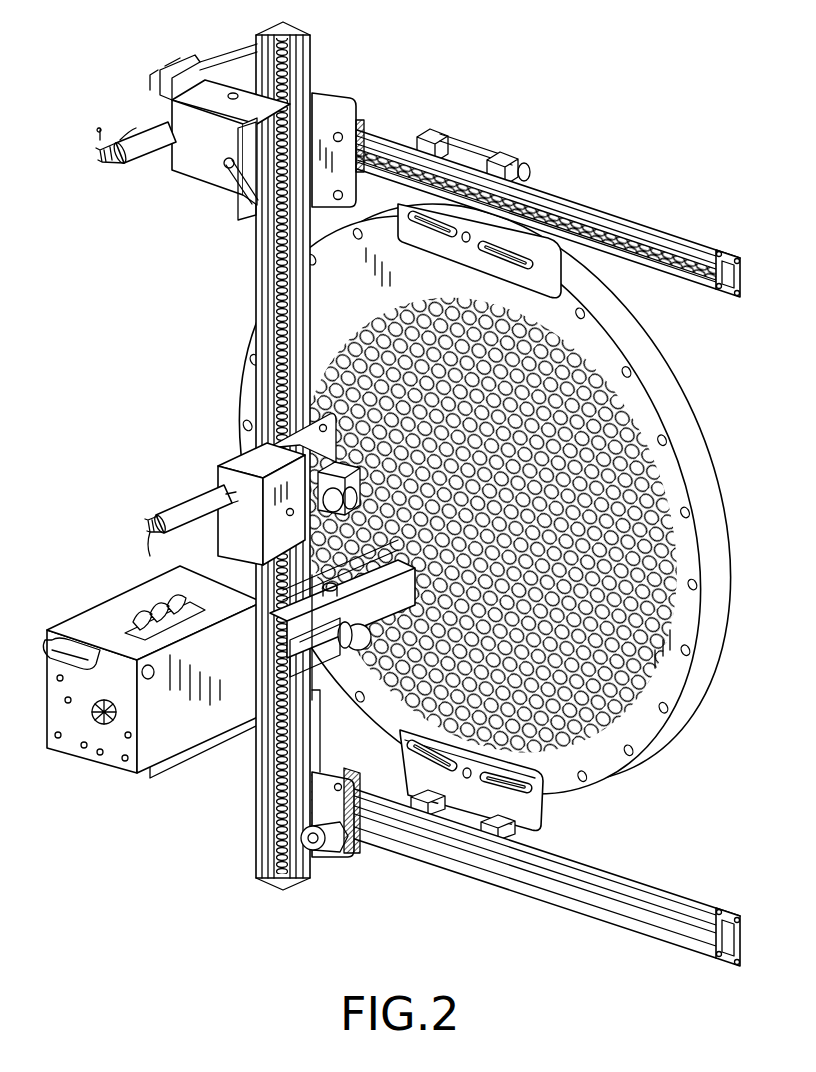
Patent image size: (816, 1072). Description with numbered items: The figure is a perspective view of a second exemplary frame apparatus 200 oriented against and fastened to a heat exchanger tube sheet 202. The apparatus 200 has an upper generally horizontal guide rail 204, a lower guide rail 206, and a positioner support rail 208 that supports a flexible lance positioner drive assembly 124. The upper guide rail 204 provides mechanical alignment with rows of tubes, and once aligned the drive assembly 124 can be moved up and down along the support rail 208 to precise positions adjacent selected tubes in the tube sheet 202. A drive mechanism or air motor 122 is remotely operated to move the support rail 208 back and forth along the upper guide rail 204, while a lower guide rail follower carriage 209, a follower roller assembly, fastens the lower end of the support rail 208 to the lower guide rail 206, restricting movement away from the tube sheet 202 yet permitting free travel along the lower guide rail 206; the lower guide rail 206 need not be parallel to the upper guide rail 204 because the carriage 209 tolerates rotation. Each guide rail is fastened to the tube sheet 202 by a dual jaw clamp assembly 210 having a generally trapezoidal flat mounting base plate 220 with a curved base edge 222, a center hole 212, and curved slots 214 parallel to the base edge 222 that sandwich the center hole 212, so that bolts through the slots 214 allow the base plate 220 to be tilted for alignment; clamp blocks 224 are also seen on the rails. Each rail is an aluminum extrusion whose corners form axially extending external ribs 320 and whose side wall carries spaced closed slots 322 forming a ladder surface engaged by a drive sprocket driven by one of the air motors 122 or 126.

The frame apparatus 200 is at (642, 170).
The tube sheet 202 is at (705, 466).
The upper guide rail 204 is at (568, 243).
The lower guide rail 206 is at (694, 898).
The positioner support rail 208 is at (256, 262).
The lower guide rail follower carriage 209 is at (334, 872).
The dual jaw clamp assembly 210 is at (579, 458).
The center hole 212 is at (468, 246).
The curved slots 214 is at (522, 280).
The mounting base plate 220 is at (579, 489).
The curved base edge 222 is at (433, 248).
The clamp block 224 is at (440, 135).
The external rib 320 is at (730, 254).
The closed slots 322 is at (694, 284).
The drive mechanism/air motor 122 is at (150, 180).
The flexible lance positioner drive assembly 124 is at (100, 575).
The air motor 126 is at (192, 496).